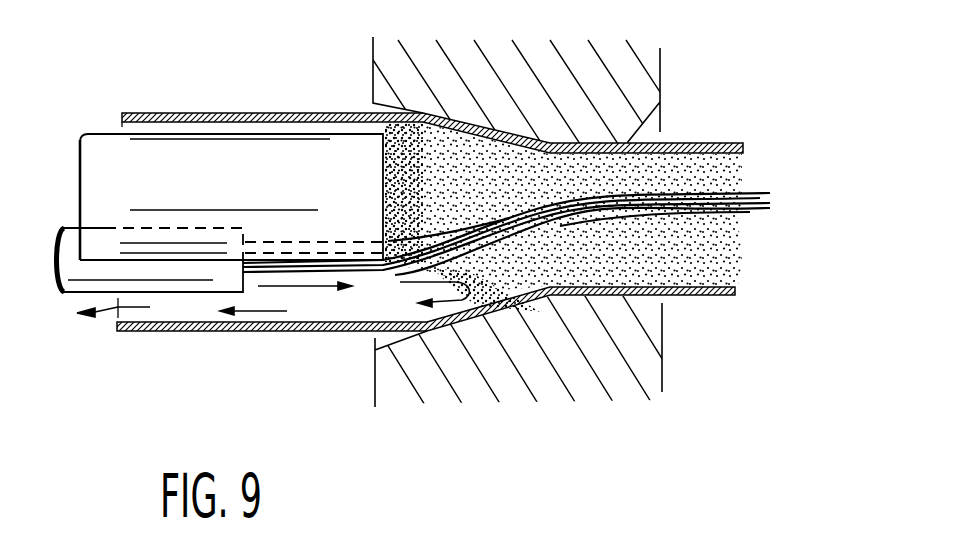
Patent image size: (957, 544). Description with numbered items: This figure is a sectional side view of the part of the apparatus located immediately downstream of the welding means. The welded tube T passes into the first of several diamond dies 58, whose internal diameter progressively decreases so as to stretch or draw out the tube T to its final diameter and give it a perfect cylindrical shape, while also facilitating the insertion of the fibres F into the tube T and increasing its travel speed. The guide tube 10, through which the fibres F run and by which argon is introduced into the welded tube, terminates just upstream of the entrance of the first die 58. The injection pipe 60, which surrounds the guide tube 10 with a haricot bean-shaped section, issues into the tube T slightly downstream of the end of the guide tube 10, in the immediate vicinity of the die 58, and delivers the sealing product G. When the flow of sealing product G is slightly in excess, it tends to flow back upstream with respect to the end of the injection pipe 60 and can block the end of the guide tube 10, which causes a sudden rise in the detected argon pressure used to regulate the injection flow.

The guide tube 10 is at (75, 272).
The diamond die 58 is at (415, 378).
The injection pipe 60 is at (103, 165).
The tube T is at (333, 115).
The sealing product G is at (712, 167).
The fibres F is at (757, 212).